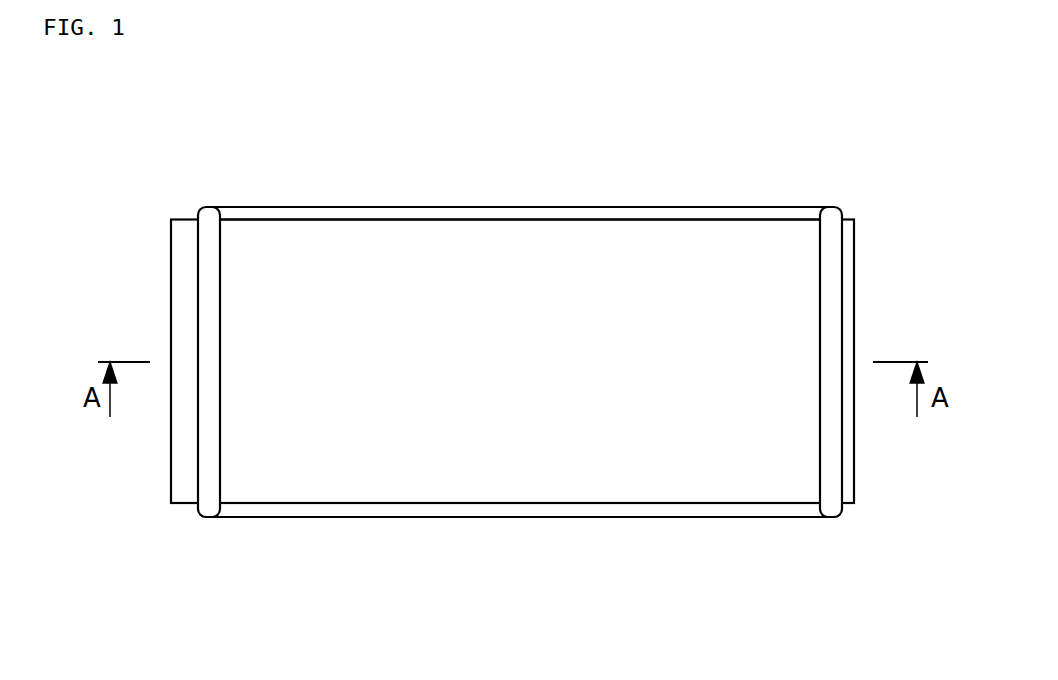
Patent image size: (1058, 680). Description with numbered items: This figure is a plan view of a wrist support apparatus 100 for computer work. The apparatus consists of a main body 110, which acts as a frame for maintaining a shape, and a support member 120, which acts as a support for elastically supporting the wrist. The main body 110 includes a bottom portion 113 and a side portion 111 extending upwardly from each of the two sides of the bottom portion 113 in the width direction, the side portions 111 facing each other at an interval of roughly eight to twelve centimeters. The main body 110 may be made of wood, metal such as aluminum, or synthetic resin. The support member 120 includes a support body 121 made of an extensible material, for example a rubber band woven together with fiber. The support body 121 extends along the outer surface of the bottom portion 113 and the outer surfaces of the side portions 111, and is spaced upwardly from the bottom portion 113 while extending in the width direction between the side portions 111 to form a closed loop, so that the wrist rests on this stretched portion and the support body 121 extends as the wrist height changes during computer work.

The wrist support apparatus 100 is at (370, 108).
The main body 110 is at (520, 347).
The side portion 111 is at (217, 262).
The bottom portion 113 is at (462, 210).
The support member 120 is at (358, 542).
The support body 121 is at (512, 478).